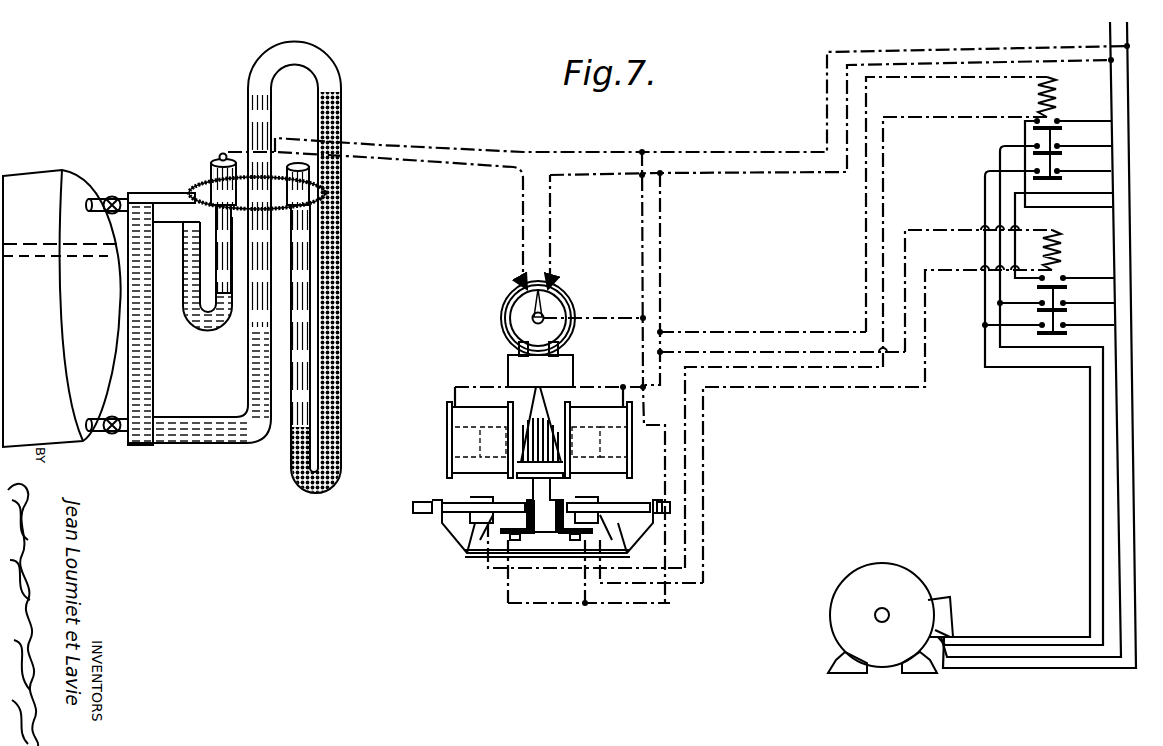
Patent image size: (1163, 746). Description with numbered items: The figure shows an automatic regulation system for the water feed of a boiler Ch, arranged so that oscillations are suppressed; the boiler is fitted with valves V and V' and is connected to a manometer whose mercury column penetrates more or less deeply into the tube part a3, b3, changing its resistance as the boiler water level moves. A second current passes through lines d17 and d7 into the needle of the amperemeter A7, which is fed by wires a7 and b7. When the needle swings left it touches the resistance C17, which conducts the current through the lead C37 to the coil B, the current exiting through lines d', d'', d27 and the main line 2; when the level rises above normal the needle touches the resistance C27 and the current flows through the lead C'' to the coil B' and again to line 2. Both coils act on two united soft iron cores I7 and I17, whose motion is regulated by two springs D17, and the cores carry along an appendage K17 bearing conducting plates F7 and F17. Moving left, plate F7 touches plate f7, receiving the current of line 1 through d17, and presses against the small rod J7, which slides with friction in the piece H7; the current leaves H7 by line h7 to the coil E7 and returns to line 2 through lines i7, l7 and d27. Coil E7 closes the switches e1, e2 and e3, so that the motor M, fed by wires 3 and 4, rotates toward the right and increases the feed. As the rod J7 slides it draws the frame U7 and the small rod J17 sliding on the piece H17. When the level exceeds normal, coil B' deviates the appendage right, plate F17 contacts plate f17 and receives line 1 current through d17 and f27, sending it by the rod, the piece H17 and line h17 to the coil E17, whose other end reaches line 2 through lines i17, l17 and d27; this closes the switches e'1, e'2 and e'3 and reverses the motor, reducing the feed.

The boiler Ch is at (62, 308).
The valve V is at (107, 195).
The valve V' is at (107, 441).
The tube part b3 is at (222, 154).
The tube part a3 is at (305, 224).
The indicating gauge A7 is at (497, 308).
The gauge wire a7 is at (519, 284).
The gauge wire b7 is at (554, 273).
The resistance C17 is at (503, 324).
The resistance C27 is at (568, 332).
The lead C37 is at (508, 368).
The lead C'' is at (591, 371).
The springs D17 is at (540, 422).
The line d17 is at (641, 227).
The line d27 is at (663, 233).
The line d7 is at (631, 316).
The line d' is at (529, 394).
The line d'' is at (626, 373).
The coil B is at (480, 433).
The coil B' is at (598, 433).
The soft iron core I7 is at (467, 442).
The soft iron core I17 is at (614, 442).
The appendage K17 is at (545, 476).
The plate F7 is at (526, 506).
The plate F17 is at (589, 486).
The small rod J7 is at (500, 503).
The small rod J17 is at (600, 503).
The frame U7 is at (484, 556).
The piece H7 is at (480, 522).
The piece H17 is at (608, 522).
The plate f7 is at (512, 545).
The plate f17 is at (575, 545).
The line f27 is at (626, 604).
The line l7 is at (700, 333).
The line l17 is at (730, 347).
The line i7 is at (866, 190).
The wire i17 is at (905, 262).
The line h7 is at (885, 210).
The line h17 is at (927, 312).
The coil E7 is at (1062, 97).
The coil E17 is at (1073, 250).
The switch e1 is at (1068, 162).
The switch e2 is at (1072, 151).
The switch e3 is at (1072, 176).
The switch e'1 is at (1064, 263).
The switch e'2 is at (1055, 309).
The switch e'3 is at (1048, 331).
The line 1 is at (748, 151).
The main line 2 is at (760, 176).
The motor wire 3 is at (1103, 413).
The motor wire 4 is at (1090, 450).
The motor M is at (898, 574).